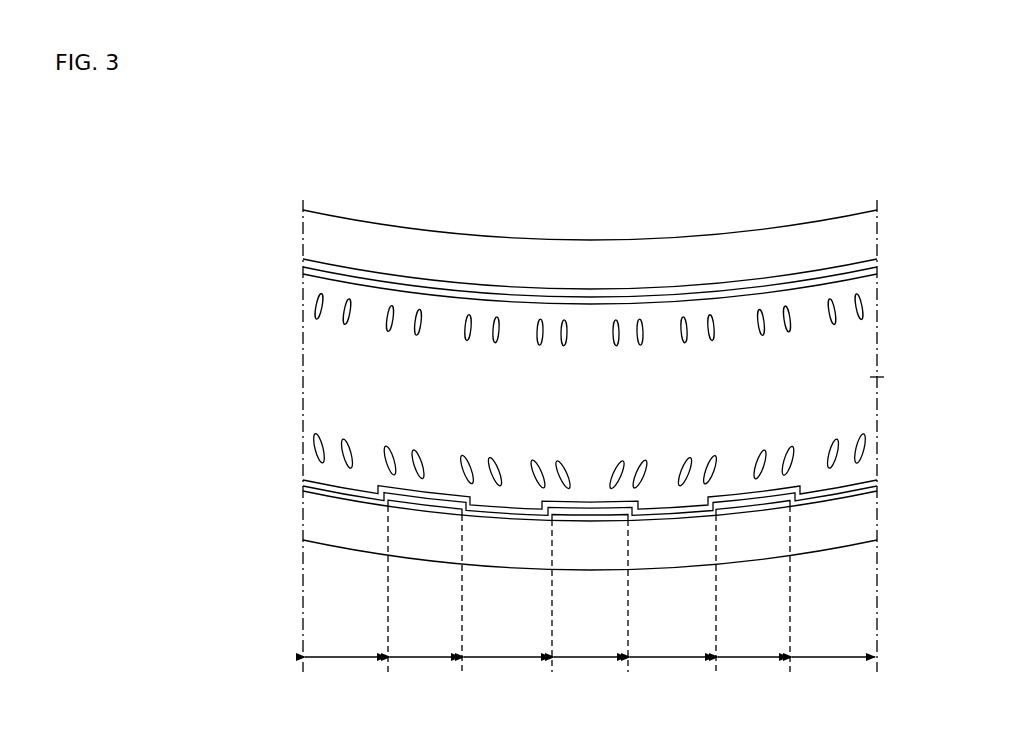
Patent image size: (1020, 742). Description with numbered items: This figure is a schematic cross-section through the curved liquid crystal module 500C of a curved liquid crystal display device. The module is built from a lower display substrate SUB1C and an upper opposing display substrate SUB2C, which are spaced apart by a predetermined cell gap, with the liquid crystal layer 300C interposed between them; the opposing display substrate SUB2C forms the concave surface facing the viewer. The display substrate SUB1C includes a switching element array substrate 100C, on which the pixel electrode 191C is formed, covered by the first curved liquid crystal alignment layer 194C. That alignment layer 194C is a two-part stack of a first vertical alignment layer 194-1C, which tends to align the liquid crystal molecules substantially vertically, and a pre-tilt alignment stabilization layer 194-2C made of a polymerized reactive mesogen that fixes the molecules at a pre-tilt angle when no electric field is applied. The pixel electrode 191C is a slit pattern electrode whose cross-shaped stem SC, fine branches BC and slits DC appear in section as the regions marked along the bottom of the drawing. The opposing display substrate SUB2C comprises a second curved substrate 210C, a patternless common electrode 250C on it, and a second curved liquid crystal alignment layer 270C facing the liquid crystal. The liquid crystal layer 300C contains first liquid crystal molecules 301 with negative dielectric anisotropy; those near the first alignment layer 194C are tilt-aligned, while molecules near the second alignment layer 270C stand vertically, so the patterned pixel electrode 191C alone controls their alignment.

The liquid crystal module 500C is at (580, 139).
The opposing display substrate SUB2C is at (221, 205).
The second curved substrate 210C is at (303, 212).
The common electrode 250C is at (303, 262).
The second curved liquid crystal alignment layer 270C is at (303, 274).
The liquid crystal layer 300C is at (883, 283).
The first liquid crystal molecules 301 is at (474, 336).
The display substrate SUB1C is at (215, 528).
The first curved liquid crystal alignment layer 194C is at (218, 458).
The pre-tilt alignment stabilization layer 194-2C is at (303, 482).
The first vertical alignment layer 194-1C is at (303, 488).
The switching element array substrate 100C is at (306, 522).
The pixel electrode 191C is at (403, 507).
The slits DC is at (590, 672).
The fine branches BC is at (589, 672).
The cross-shaped stem SC is at (590, 672).